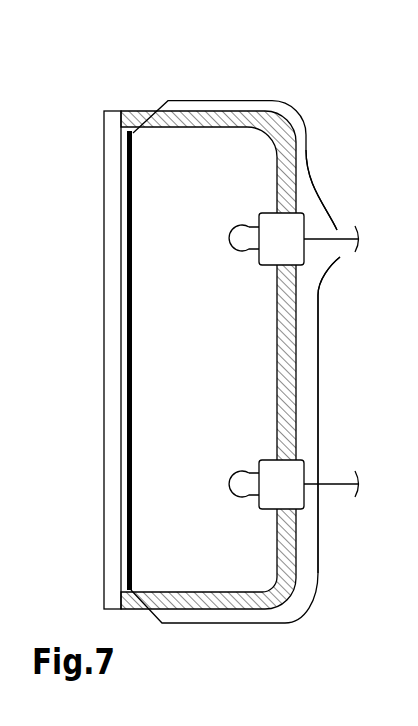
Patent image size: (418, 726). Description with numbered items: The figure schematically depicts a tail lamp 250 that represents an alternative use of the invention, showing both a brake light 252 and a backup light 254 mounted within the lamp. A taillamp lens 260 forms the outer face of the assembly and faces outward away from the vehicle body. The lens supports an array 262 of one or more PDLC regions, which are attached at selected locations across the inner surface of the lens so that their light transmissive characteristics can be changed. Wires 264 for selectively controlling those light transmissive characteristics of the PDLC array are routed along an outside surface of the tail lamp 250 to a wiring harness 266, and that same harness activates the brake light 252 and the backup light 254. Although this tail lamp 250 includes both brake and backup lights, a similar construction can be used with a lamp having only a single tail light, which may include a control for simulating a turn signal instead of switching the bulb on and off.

The tail lamp 250 is at (224, 86).
The brake light 252 is at (240, 237).
The backup light 254 is at (237, 485).
The taillamp lens 260 is at (103, 402).
The array of PDLC regions 262 is at (132, 323).
The wires 264 is at (318, 573).
The wiring harness 266 is at (343, 243).